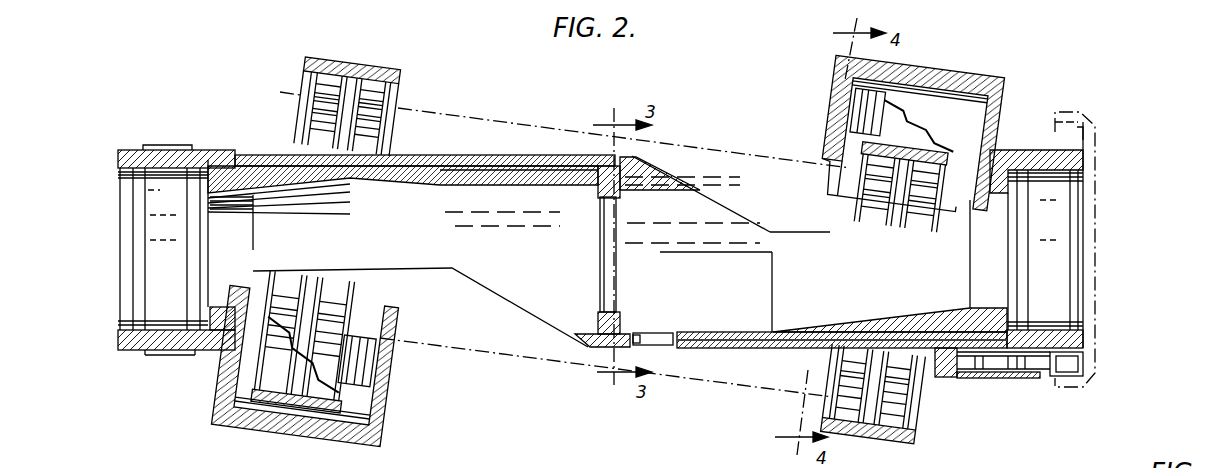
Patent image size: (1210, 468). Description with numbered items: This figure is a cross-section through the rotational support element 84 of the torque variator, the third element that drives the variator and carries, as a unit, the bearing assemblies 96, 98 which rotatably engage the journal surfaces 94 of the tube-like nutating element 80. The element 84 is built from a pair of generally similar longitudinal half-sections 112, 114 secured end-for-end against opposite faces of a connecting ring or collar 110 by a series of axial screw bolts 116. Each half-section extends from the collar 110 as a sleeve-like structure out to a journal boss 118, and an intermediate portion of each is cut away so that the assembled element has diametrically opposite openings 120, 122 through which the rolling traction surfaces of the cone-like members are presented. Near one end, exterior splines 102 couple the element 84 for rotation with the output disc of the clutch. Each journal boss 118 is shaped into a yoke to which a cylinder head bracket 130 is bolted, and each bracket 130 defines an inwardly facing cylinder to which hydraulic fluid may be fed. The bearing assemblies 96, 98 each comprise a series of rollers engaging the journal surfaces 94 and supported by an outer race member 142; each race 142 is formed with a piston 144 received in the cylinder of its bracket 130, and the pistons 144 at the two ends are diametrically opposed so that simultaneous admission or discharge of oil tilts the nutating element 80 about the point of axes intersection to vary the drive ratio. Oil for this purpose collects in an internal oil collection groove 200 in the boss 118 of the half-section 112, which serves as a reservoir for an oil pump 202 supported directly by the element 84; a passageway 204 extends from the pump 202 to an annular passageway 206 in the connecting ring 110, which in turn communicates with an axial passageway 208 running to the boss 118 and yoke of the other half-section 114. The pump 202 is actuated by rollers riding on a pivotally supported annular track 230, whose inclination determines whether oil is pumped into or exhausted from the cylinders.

The nutating element 80 is at (274, 90).
The support element 84 is at (254, 134).
The journal surfaces 94 is at (543, 359).
The bearing assembly 96 is at (882, 446).
The bearing assembly 98 is at (392, 60).
The exterior splines 102 is at (183, 136).
The connecting ring 110 is at (618, 207).
The longitudinal half-section 112 is at (718, 346).
The longitudinal half-section 114 is at (464, 155).
The axial screw bolts 116 is at (648, 340).
The journal bosses 118 is at (135, 345).
The opening 120 is at (735, 215).
The opening 122 is at (452, 290).
The cylinder head bracket 130 is at (955, 72).
The outer race member 142 is at (395, 73).
The piston 144 is at (847, 118).
The oil collection groove 200 is at (1012, 176).
The oil pump 202 is at (986, 379).
The passageway 204 is at (840, 331).
The annular passageway 206 is at (616, 325).
The axial passageway 208 is at (573, 172).
The annular track 230 is at (1095, 125).